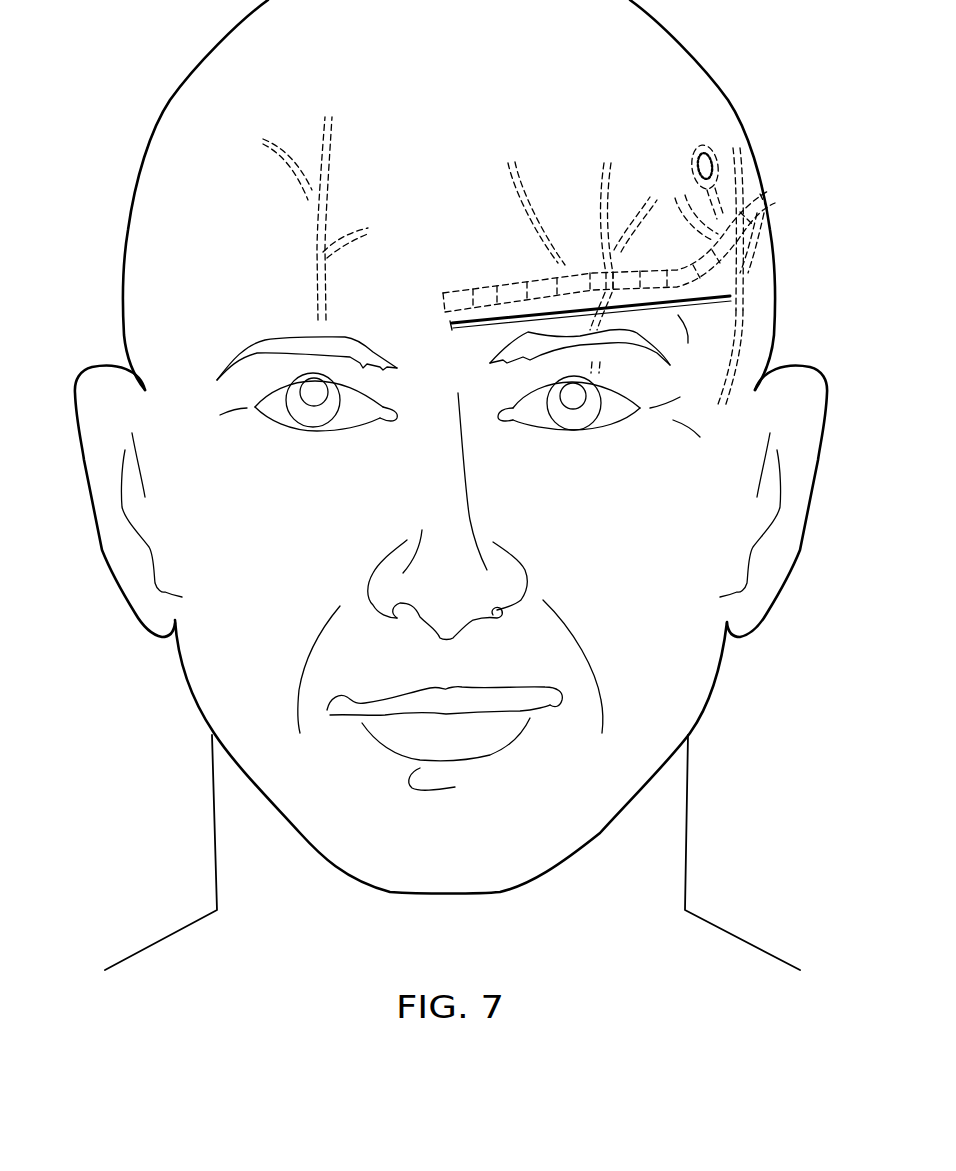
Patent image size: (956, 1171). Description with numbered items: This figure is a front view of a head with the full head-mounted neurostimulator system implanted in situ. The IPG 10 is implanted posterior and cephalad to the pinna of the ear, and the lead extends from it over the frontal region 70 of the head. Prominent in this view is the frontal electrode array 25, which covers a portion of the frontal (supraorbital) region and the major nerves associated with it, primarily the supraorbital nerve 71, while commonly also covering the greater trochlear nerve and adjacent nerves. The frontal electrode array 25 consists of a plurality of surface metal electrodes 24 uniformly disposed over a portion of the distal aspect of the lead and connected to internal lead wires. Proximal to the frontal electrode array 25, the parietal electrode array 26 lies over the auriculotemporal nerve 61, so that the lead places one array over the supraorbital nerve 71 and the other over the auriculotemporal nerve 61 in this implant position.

The frontal region 70 is at (465, 107).
The supraorbital nerve 71 is at (312, 250).
The surface metal electrodes 24 is at (576, 265).
The frontal electrode array 25 is at (598, 312).
The parietal electrode array 26 is at (744, 226).
The auriculotemporal nerve 61 is at (753, 310).
The IPG 10 is at (703, 143).